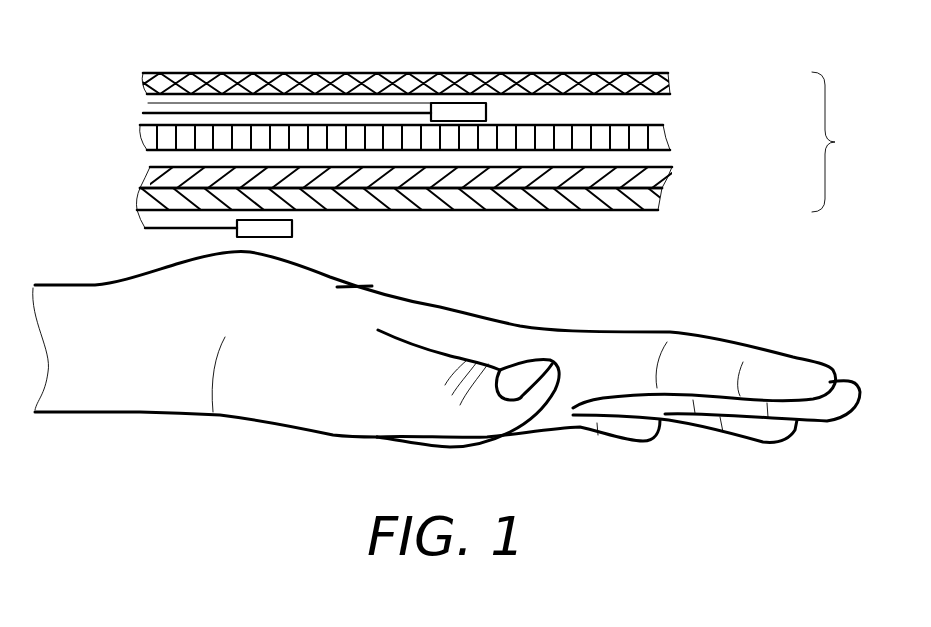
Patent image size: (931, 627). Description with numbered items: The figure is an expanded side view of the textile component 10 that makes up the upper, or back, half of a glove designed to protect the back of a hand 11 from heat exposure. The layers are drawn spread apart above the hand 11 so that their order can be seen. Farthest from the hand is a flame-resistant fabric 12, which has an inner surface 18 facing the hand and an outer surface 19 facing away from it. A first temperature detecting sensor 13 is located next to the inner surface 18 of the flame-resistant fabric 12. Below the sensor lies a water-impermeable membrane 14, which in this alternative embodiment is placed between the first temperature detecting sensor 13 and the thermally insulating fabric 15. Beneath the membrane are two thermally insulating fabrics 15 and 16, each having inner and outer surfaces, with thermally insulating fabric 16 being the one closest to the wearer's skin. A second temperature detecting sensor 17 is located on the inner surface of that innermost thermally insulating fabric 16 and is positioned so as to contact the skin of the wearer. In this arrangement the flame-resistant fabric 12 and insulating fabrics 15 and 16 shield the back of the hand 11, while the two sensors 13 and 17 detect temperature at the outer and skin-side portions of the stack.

The textile component 10 is at (838, 142).
The hand 11 is at (723, 342).
The flame-resistant fabric 12 is at (668, 80).
The first temperature detecting sensor 13 is at (486, 110).
The water-impermeable membrane 14 is at (666, 140).
The thermally insulating fabric 15 is at (671, 176).
The thermally insulating fabric 16 is at (660, 205).
The second temperature detecting sensor 17 is at (292, 228).
The inner surface 18 is at (625, 94).
The outer surface 19 is at (568, 72).